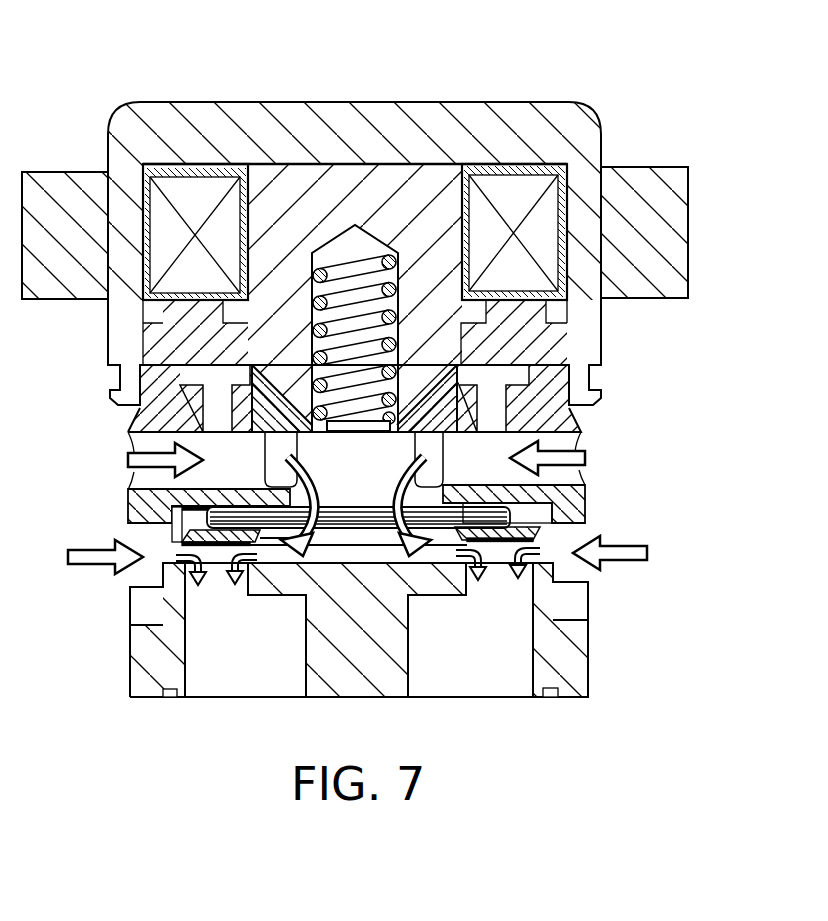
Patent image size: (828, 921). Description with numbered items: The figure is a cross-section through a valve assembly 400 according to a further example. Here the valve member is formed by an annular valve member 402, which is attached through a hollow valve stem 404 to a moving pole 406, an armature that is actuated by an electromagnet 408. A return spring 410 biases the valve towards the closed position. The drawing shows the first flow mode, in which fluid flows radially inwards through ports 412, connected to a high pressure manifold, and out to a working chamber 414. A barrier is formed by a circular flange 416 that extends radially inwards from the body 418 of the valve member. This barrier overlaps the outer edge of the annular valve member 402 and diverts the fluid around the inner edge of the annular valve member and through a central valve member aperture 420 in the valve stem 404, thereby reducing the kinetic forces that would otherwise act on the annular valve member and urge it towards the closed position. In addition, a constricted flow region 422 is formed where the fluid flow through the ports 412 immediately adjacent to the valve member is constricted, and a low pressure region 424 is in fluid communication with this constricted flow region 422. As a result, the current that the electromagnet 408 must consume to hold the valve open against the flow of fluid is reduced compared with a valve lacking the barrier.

The valve assembly 400 is at (140, 71).
The annular valve member 402 is at (540, 540).
The hollow valve stem 404 is at (433, 447).
The moving pole 406 is at (433, 388).
The electromagnet 408 is at (163, 262).
The return spring 410 is at (349, 277).
The ports 412 is at (128, 537).
The working chamber 414 is at (377, 737).
The circular flange 416 is at (510, 483).
The body of the valve member 418 is at (530, 510).
The central valve member aperture 420 is at (353, 540).
The constricted flow region 422 is at (557, 552).
The low pressure region 424 is at (550, 500).